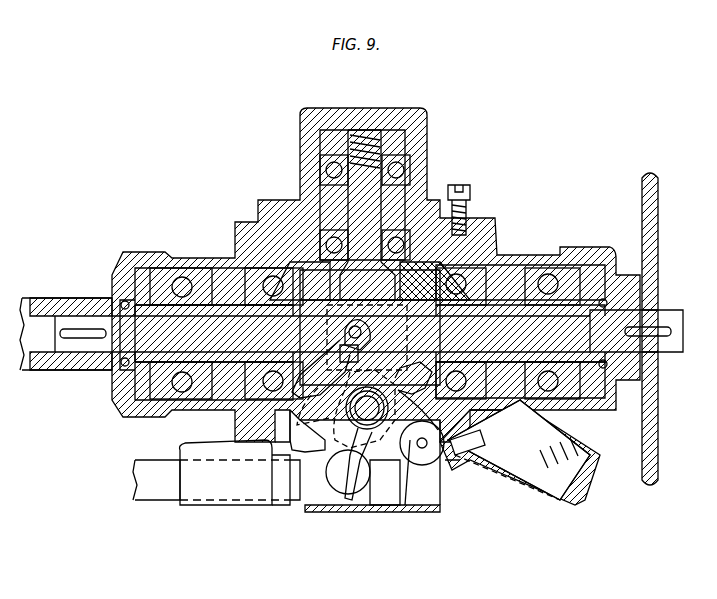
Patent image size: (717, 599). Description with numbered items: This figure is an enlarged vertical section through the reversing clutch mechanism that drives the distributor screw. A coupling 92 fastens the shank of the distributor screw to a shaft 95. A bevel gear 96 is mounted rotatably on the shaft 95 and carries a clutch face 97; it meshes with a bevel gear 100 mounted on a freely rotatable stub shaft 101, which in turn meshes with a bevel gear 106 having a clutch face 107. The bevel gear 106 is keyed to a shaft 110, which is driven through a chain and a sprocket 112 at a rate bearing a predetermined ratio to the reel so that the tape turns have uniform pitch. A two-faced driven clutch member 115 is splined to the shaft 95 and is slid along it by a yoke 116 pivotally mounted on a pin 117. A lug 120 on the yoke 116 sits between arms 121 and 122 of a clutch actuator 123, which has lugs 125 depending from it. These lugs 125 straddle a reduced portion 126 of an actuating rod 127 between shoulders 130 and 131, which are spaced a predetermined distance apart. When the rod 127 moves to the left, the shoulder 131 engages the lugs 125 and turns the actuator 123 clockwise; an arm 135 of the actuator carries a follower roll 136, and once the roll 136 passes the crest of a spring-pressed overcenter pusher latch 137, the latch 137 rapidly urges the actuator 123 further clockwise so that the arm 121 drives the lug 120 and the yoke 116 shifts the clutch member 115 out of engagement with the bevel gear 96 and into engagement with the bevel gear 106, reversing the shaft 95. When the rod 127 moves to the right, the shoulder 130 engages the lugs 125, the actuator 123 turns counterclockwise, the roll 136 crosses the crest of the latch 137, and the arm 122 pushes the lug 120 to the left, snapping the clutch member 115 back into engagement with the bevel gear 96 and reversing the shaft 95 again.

The coupling 92 is at (30, 300).
The shaft 95 is at (82, 348).
The bevel gear 96 is at (300, 290).
The clutch face 97 is at (325, 322).
The bevel gear 100 is at (415, 258).
The stub shaft 101 is at (352, 165).
The bevel gear 106 is at (432, 292).
The clutch face 107 is at (370, 312).
The shaft 110 is at (500, 331).
The sprocket 112 is at (652, 480).
The two-faced driven clutch member 115 is at (367, 298).
The yoke 116 is at (345, 410).
The pin 117 is at (370, 412).
The lug 120 is at (400, 326).
The arm 121 is at (340, 350).
The arm 122 is at (396, 372).
The clutch actuator 123 is at (405, 440).
The lugs 125 is at (335, 485).
The reduced portion 126 is at (320, 500).
The actuating rod 127 is at (165, 492).
The shoulder 130 is at (305, 500).
The shoulder 131 is at (380, 505).
The arm 135 is at (415, 465).
The follower roll 136 is at (430, 465).
The spring-pressed overcenter pusher latch 137 is at (500, 470).